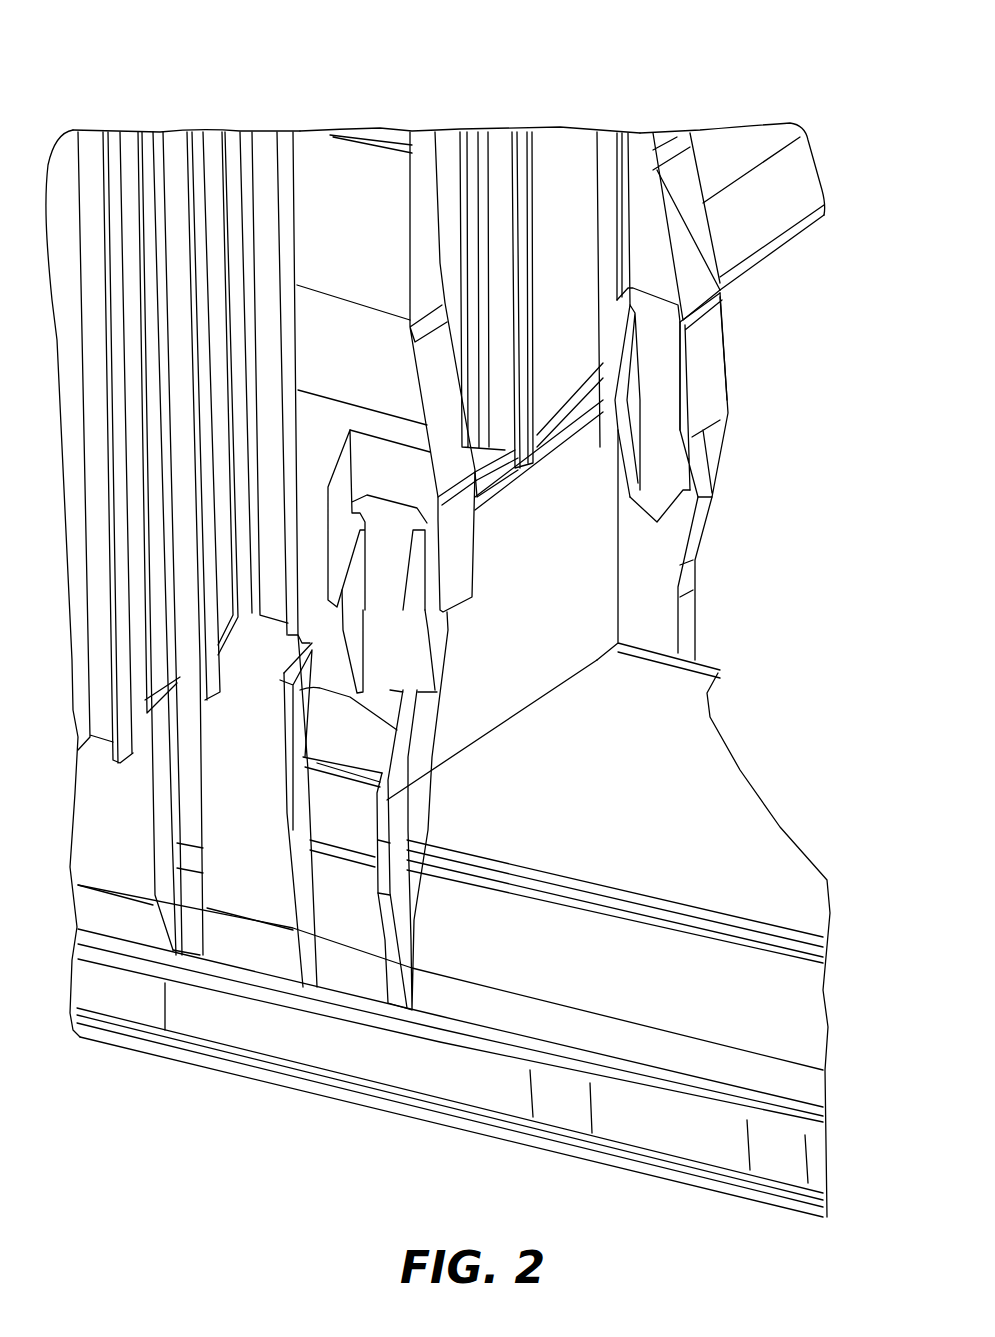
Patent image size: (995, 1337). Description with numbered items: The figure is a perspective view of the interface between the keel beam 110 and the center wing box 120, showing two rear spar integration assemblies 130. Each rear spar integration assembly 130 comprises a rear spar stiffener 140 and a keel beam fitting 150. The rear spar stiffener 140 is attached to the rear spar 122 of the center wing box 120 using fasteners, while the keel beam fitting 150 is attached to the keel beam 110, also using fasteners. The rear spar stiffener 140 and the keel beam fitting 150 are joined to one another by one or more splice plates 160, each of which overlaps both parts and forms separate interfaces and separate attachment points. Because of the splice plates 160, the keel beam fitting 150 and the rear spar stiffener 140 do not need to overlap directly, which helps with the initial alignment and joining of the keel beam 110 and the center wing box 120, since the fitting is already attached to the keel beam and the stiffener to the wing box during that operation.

The keel beam 110 is at (712, 807).
The center wing box 120 is at (160, 124).
The rear spar 122 is at (560, 160).
The rear spar integration assembly 130 is at (390, 116).
The rear spar stiffener 140 is at (340, 197).
The keel beam fitting 150 is at (670, 540).
The splice plates 160 is at (425, 606).